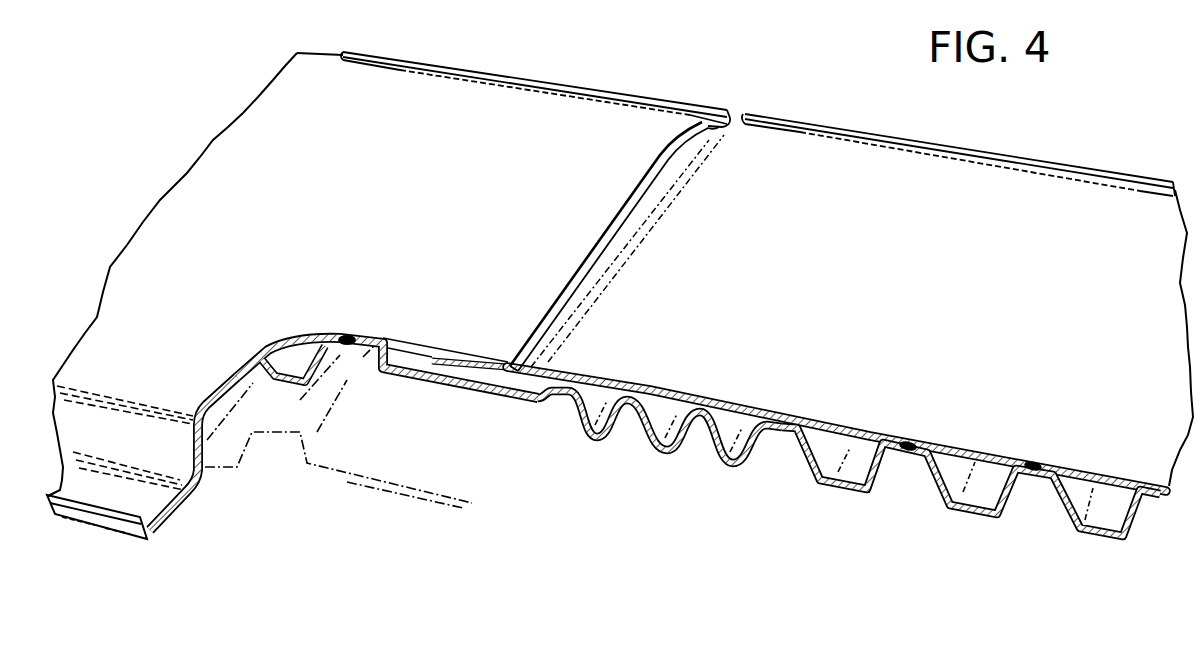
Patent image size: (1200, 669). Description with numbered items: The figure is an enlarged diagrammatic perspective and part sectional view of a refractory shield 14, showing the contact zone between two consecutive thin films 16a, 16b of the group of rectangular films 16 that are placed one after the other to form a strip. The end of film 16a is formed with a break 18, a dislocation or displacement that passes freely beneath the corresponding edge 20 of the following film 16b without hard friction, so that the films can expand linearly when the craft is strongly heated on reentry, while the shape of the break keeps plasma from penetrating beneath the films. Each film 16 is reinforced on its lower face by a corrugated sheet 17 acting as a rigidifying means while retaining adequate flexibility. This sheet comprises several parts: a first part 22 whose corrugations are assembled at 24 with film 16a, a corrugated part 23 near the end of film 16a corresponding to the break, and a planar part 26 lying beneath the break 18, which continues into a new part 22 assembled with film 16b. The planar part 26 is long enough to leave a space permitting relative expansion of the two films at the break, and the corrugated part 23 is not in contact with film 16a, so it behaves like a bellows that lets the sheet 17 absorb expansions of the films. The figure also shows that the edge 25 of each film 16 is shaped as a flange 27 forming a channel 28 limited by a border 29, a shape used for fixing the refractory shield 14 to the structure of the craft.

The refractory shield 14 is at (773, 100).
The thin film 16 is at (409, 52).
The film 16a is at (1100, 193).
The film 16b is at (523, 110).
The corrugated sheet 17 is at (746, 466).
The break 18 is at (536, 401).
The edge 20 is at (590, 266).
The first part 22 is at (356, 350).
The corrugated part 23 is at (668, 455).
The assembly point 24 is at (347, 336).
The edge 25 is at (167, 531).
The planar part 26 is at (414, 383).
The flange 27 is at (182, 506).
The channel 28 is at (90, 480).
The border 29 is at (125, 522).